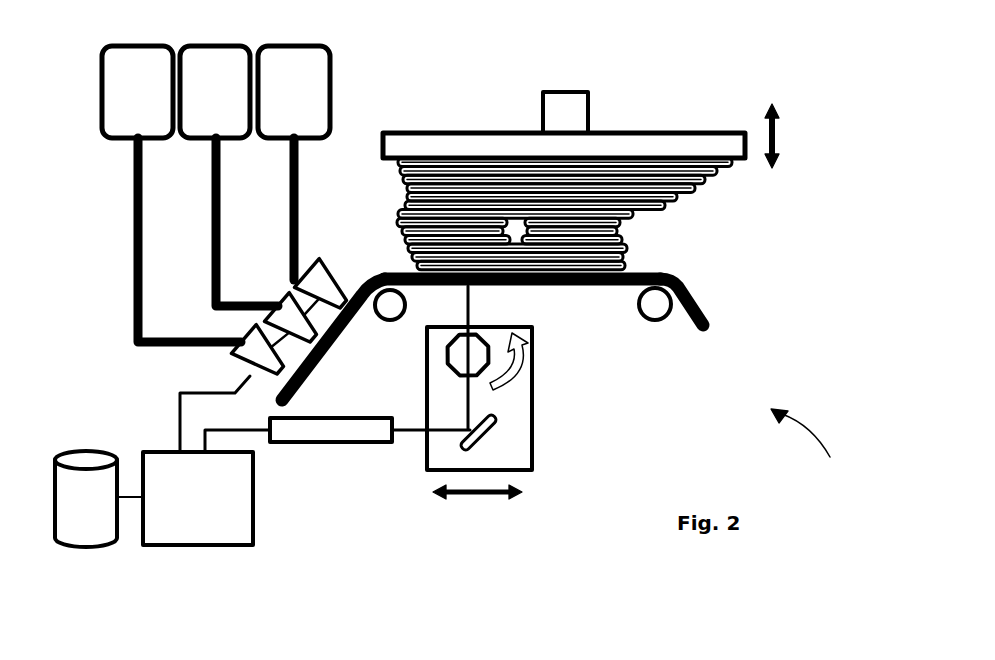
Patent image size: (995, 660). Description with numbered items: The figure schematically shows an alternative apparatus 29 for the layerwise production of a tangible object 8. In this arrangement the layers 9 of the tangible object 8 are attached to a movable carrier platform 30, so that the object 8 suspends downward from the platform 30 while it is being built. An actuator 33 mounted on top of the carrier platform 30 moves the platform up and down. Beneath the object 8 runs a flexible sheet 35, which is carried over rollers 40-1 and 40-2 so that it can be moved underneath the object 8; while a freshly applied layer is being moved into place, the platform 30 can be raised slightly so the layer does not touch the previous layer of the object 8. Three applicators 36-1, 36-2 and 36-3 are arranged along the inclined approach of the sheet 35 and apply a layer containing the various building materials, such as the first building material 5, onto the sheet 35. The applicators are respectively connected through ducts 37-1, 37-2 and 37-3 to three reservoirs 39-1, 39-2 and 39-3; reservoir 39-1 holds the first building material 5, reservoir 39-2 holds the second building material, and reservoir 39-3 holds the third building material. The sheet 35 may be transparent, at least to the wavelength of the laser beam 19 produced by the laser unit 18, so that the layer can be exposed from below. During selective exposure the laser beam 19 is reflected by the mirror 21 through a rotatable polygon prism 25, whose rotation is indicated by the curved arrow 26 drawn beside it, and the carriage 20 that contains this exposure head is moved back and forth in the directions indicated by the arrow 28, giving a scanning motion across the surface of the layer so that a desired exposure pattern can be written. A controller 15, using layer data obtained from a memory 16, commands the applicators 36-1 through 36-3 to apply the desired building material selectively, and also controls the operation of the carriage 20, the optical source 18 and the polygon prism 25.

The first building material 5 is at (392, 272).
The tangible object 8 is at (398, 196).
The layers 9 is at (637, 213).
The controller 15 is at (254, 514).
The memory 16 is at (55, 498).
The laser unit 18 is at (305, 443).
The laser beam 19 is at (407, 433).
The carriage 20 is at (532, 462).
The mirror 21 is at (482, 440).
The rotatable polygon prism 25 is at (455, 374).
The rotation direction of polygon mirror 26 is at (522, 381).
The arrow 28 is at (485, 496).
The apparatus 29 is at (808, 450).
The movable carrier platform 30 is at (460, 133).
The actuator 33 is at (568, 92).
The flexible sheet 35 is at (292, 398).
The applicator 36-1 is at (330, 271).
The applicator 36-2 is at (288, 296).
The applicator 36-3 is at (238, 362).
The duct 37-1 is at (290, 203).
The duct 37-2 is at (212, 203).
The duct 37-3 is at (133, 290).
The building material reservoir 39-1 is at (330, 87).
The building material reservoir 39-2 is at (217, 46).
The building material reservoir 39-3 is at (102, 108).
The roller 40-1 is at (385, 321).
The roller 40-2 is at (655, 321).